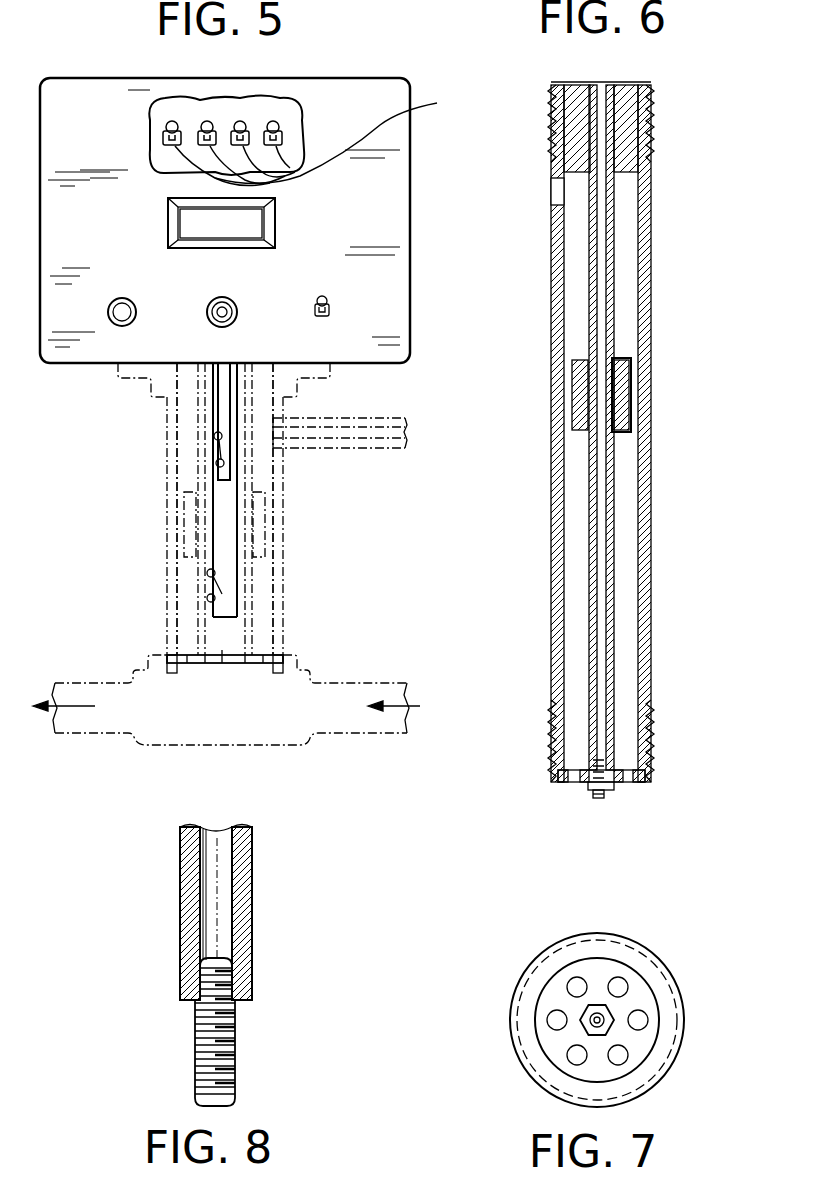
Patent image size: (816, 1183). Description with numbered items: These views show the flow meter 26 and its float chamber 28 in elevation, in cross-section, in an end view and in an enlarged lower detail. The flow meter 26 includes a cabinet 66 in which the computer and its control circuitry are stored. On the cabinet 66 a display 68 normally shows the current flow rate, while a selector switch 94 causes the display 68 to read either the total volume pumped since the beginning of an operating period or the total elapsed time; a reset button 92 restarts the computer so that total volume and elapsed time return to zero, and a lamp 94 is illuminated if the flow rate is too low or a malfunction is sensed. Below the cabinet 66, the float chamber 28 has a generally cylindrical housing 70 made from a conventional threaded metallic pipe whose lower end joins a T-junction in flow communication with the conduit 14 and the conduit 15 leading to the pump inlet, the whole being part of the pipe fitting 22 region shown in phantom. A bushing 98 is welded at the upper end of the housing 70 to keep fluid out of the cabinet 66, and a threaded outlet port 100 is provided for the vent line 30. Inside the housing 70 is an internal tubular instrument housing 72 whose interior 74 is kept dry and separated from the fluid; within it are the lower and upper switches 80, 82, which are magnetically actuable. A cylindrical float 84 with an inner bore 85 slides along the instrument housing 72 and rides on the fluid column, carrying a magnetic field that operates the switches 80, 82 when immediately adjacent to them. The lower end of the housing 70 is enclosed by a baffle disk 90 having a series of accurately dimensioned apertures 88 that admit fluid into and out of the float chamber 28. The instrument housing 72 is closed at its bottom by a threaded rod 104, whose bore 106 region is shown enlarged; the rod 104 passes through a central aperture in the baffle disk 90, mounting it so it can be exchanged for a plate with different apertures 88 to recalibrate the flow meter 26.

In FIG. 5, the flow meter 26 is at (97, 76).
In FIG. 5, the cabinet 66 is at (361, 100).
In FIG. 5, the display 68 is at (258, 222).
In FIG. 5, the reset button 92 is at (121, 298).
In FIG. 5, the selector switch 94 is at (218, 298).
In FIG. 5, the threaded outlet port 100 is at (277, 420).
In FIG. 6, the threaded outlet port 100 is at (556, 190).
In FIG. 5, the float chamber 28 is at (158, 444).
In FIG. 5, the vent line 30 is at (355, 440).
In FIG. 5, the upper switch 82 is at (213, 450).
In FIG. 5, the float 84 is at (257, 520).
In FIG. 6, the float 84 is at (630, 395).
In FIG. 6, the inner bore 85 is at (621, 360).
In FIG. 5, the housing 70 is at (275, 556).
In FIG. 6, the housing 70 is at (643, 492).
In FIG. 5, the internal tubular instrument housing 72 is at (250, 628).
In FIG. 6, the internal tubular instrument housing 72 is at (610, 612).
In FIG. 8, the internal tubular instrument housing 72 is at (190, 923).
In FIG. 5, the lower switch 80 is at (230, 590).
In FIG. 5, the apertures 88 is at (183, 655).
In FIG. 7, the apertures 88 is at (575, 985).
In FIG. 5, the baffle disk 90 is at (205, 664).
In FIG. 6, the baffle disk 90 is at (612, 768).
In FIG. 7, the baffle disk 90 is at (680, 975).
In FIG. 5, the interior 74 is at (223, 650).
In FIG. 5, the pipe fitting 22 is at (228, 735).
In FIG. 5, the conduit 15 is at (100, 725).
In FIG. 5, the conduit 14 is at (350, 725).
In FIG. 6, the bushing 98 is at (630, 135).
In FIG. 6, the threaded rod 104 is at (604, 796).
In FIG. 7, the threaded rod 104 is at (600, 1020).
In FIG. 8, the threaded rod 104 is at (205, 1037).
In FIG. 8, the bore 106 is at (220, 890).